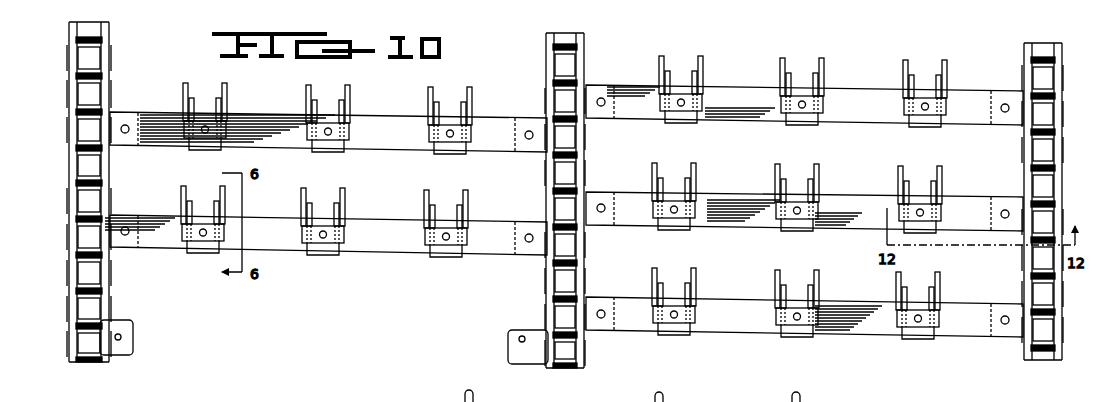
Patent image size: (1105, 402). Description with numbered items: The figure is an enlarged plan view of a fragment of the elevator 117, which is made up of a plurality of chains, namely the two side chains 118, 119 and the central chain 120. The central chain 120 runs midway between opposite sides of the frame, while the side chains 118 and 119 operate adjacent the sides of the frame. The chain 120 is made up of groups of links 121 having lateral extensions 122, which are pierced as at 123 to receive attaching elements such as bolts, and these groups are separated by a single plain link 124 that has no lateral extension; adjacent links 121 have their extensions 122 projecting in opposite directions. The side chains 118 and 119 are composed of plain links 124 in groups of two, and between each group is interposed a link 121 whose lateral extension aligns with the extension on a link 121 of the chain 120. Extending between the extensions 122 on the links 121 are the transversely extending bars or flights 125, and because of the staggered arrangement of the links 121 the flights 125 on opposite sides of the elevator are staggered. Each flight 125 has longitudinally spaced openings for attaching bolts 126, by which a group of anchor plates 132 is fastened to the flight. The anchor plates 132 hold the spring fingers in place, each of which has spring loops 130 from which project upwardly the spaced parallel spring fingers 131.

The elevator 117 is at (848, 334).
The side chain 118 is at (1060, 324).
The side chain 119 is at (67, 193).
The central chain 120 is at (541, 276).
The link 121 is at (72, 123).
The lateral extension 122 is at (130, 346).
The pierced opening 123 is at (121, 336).
The plain link 124 is at (105, 90).
The flight 125 is at (367, 242).
The attaching bolt 126 is at (450, 137).
The spring loop 130 is at (455, 108).
The spring finger 131 is at (343, 192).
The anchor plate 132 is at (348, 137).